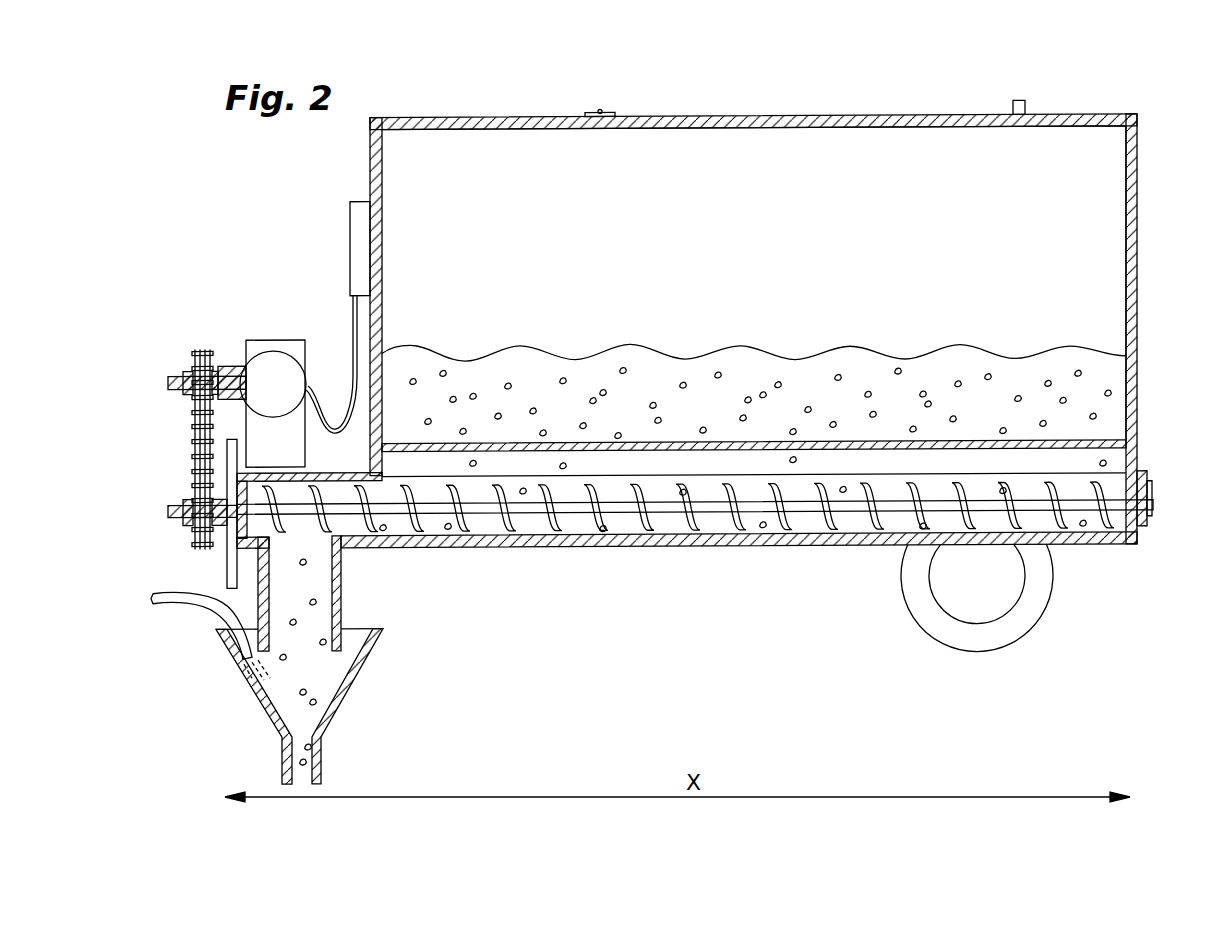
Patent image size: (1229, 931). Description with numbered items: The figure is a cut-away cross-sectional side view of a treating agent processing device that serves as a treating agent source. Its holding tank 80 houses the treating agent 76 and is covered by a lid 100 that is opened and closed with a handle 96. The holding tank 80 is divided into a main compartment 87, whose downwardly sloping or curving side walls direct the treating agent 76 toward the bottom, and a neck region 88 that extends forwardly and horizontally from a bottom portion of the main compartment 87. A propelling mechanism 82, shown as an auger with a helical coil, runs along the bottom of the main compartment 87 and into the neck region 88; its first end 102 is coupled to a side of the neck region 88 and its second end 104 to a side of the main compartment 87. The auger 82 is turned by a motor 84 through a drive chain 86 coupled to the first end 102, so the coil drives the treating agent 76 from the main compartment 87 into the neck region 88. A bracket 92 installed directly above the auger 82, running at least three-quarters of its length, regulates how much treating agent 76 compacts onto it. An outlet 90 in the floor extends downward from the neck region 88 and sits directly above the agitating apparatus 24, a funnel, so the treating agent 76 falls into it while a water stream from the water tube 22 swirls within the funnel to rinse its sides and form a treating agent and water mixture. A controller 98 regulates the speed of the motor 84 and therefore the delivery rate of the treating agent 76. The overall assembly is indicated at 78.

The water tube 22 is at (188, 604).
The agitating apparatus 24 is at (348, 676).
The treating agent 76 is at (1115, 387).
The hopper assembly 78 is at (1148, 191).
The holding tank 80 is at (1138, 290).
The propelling mechanism 82 is at (596, 528).
The motor 84 is at (270, 352).
The drive chain 86 is at (202, 347).
The main compartment 87 is at (1103, 140).
The neck region 88 is at (368, 549).
The outlet 90 is at (341, 610).
The bracket 92 is at (1106, 442).
The handle 96 is at (1022, 100).
The controller 98 is at (350, 245).
The lid 100 is at (800, 114).
The first end 102 is at (185, 500).
The second end 104 is at (1153, 504).